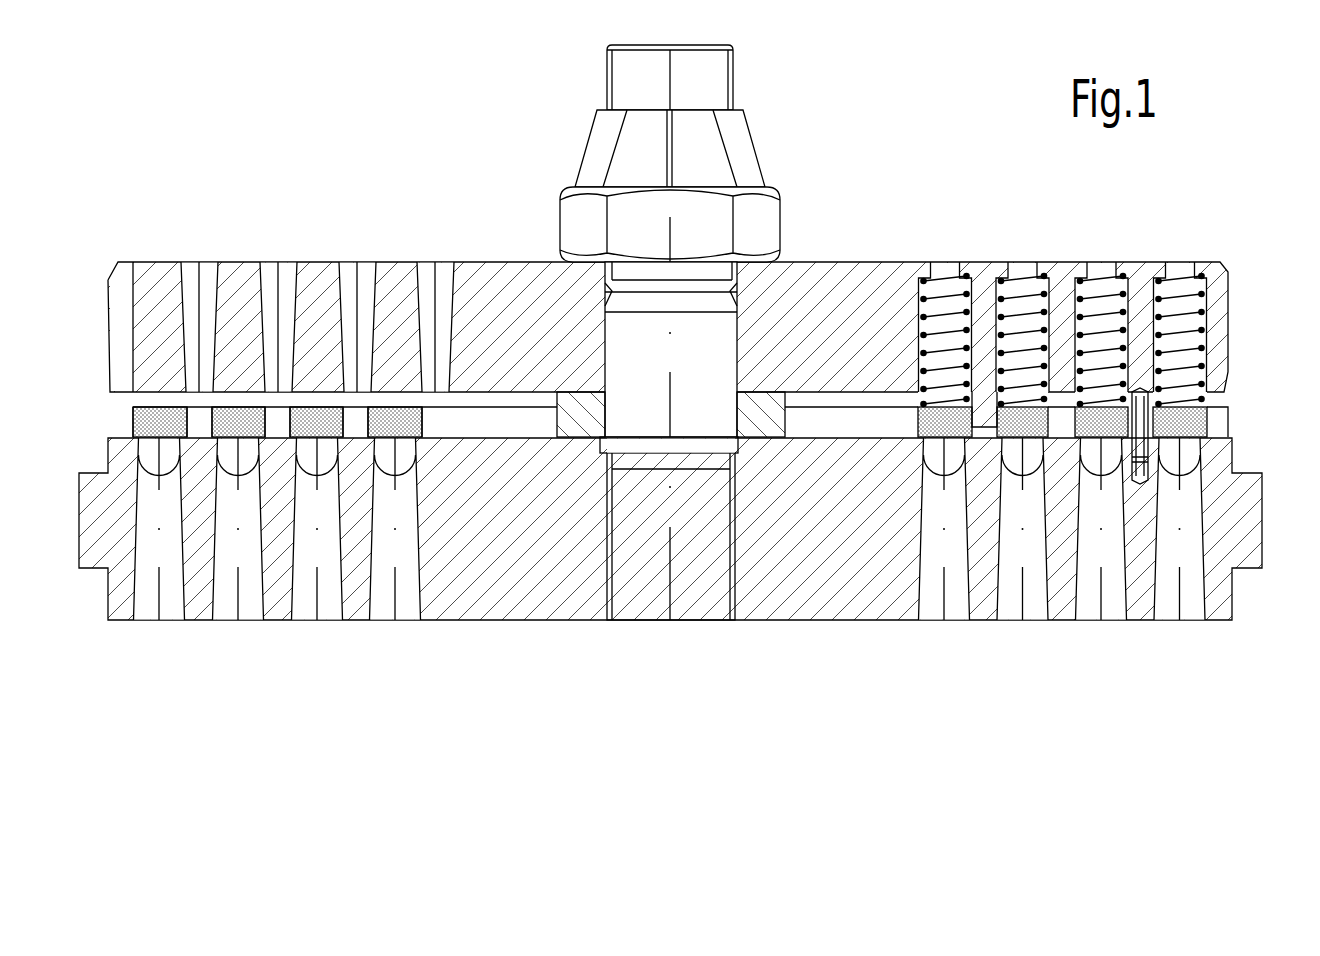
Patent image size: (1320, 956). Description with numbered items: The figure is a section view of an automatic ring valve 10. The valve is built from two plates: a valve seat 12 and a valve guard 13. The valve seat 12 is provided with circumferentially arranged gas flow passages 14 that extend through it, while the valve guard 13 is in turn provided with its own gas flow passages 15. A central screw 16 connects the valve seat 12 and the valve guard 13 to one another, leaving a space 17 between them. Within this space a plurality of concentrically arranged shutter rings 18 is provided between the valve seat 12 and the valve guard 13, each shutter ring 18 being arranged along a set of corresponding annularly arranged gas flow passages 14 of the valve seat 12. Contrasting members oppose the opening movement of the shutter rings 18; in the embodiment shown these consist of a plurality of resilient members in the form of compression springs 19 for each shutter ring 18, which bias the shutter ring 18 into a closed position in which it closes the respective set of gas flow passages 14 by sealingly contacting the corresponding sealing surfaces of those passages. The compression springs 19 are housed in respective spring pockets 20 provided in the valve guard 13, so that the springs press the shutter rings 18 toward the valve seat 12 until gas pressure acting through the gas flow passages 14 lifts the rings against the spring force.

The automatic ring valve 10 is at (922, 207).
The valve seat 12 is at (118, 594).
The valve guard 13 is at (800, 285).
The gas flow passages 14 is at (382, 612).
The gas flow passages 15 is at (270, 277).
The central screw 16 is at (705, 95).
The space 17 is at (483, 400).
The shutter rings 18 is at (152, 422).
The compression springs 19 is at (1173, 298).
The spring pockets 20 is at (1000, 297).